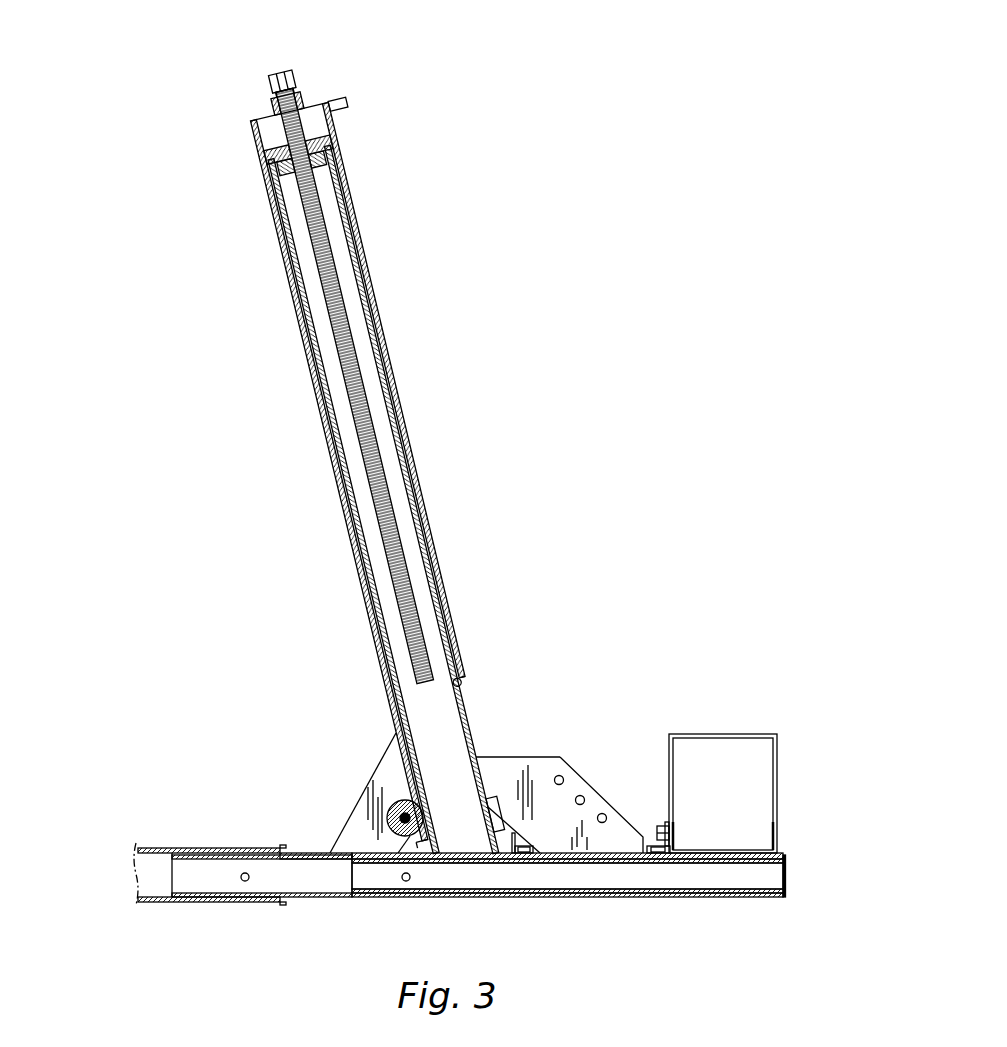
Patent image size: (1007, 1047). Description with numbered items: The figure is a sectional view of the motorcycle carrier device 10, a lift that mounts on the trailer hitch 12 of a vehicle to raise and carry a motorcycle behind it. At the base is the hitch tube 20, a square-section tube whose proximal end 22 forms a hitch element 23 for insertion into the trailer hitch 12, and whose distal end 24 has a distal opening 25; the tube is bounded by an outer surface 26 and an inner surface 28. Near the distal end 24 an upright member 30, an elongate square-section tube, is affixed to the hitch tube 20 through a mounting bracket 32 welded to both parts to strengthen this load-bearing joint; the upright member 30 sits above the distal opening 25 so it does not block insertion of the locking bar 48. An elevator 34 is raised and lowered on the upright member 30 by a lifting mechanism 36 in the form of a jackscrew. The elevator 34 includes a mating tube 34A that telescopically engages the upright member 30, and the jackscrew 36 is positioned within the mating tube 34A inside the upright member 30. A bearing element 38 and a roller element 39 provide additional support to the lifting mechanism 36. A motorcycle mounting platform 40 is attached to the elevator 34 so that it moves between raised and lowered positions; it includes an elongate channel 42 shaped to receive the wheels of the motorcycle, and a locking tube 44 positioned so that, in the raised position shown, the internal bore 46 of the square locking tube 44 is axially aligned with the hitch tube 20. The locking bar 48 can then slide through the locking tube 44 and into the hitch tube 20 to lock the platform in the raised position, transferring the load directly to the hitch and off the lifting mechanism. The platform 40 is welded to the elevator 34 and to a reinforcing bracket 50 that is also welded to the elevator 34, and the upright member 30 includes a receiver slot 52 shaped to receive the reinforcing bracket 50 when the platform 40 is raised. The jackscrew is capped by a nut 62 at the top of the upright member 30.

The motorcycle carrier device 10 is at (487, 496).
The trailer hitch 12 is at (160, 848).
The hitch tube 20 is at (320, 898).
The proximal end 22 is at (206, 903).
The hitch element 23 is at (197, 880).
The distal end 24 is at (415, 898).
The distal opening 25 is at (435, 898).
The outer surface 26 is at (305, 847).
The inner surface 28 is at (285, 887).
The upright member 30 is at (378, 308).
The mounting bracket 32 is at (385, 770).
The elevator 34 is at (467, 896).
The mating tube 34A is at (458, 686).
The lifting mechanism 36 is at (358, 383).
The bearing element 38 is at (272, 150).
The roller element 39 is at (398, 811).
The motorcycle mounting platform 40 is at (799, 849).
The elongate channel 42 is at (749, 850).
The locking tube 44 is at (705, 852).
The internal bore 46 is at (772, 872).
The locking bar 48 is at (784, 858).
The reinforcing bracket 50 is at (568, 777).
The receiver slot 52 is at (482, 754).
The nut 62 is at (279, 72).